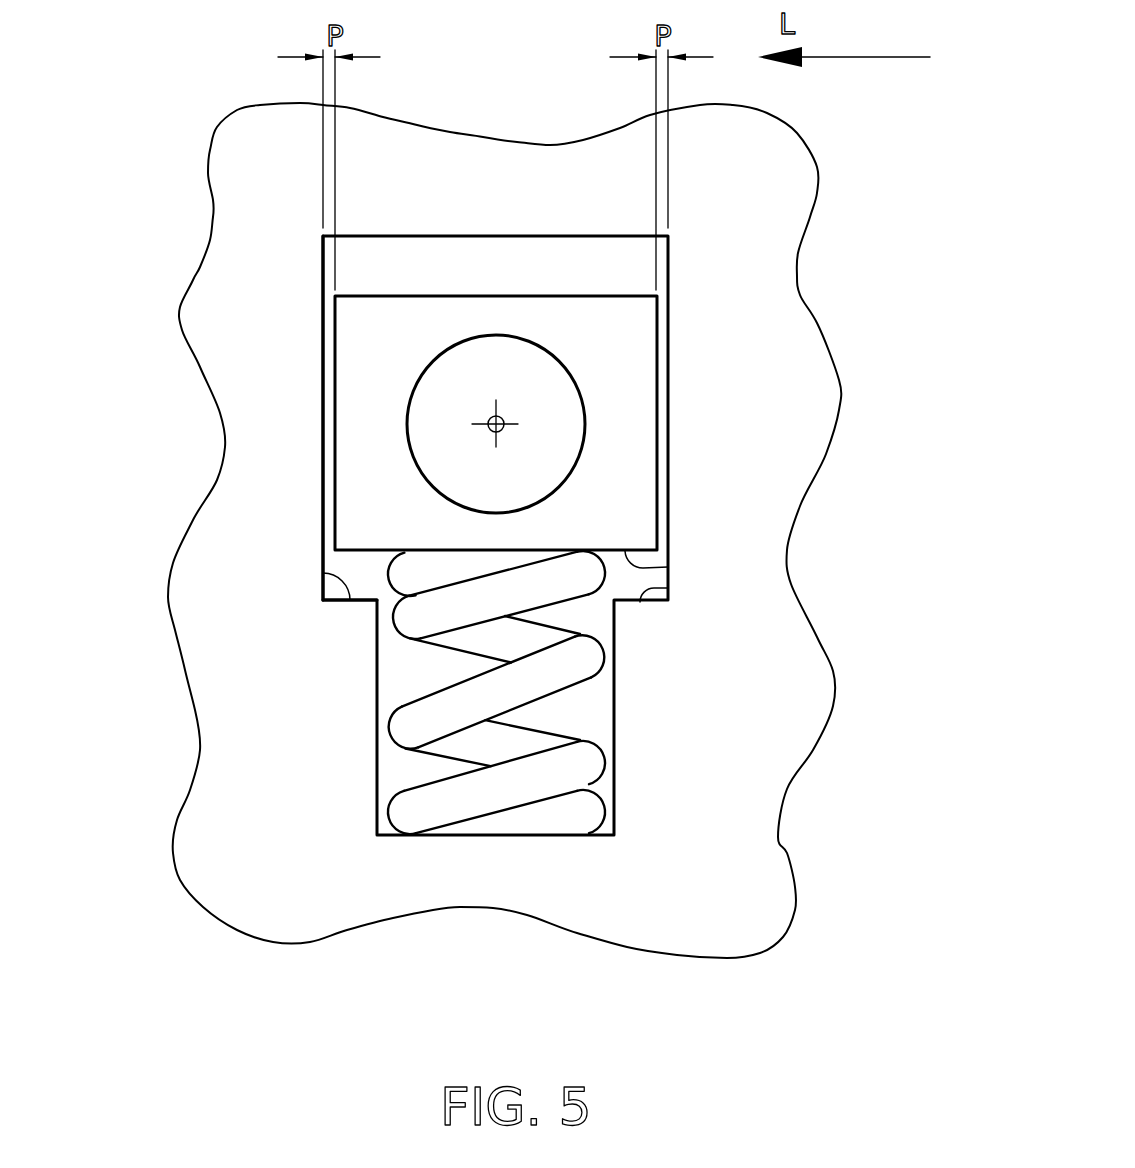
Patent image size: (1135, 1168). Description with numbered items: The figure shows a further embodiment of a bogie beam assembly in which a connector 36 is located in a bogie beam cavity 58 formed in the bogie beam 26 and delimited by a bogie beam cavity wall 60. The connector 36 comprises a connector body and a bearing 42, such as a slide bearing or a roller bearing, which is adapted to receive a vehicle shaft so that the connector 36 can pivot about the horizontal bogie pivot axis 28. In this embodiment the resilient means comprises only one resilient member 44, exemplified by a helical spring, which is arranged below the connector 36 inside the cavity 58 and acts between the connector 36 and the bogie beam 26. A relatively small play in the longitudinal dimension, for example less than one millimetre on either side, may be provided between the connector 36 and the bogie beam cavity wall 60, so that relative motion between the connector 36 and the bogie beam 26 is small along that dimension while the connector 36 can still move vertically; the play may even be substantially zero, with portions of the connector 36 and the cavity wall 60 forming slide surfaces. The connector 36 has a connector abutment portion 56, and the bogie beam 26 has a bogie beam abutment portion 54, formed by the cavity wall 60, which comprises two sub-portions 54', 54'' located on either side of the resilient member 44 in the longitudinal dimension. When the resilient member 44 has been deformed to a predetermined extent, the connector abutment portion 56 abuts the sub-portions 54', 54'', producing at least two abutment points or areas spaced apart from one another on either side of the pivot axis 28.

The bogie beam 26 is at (196, 95).
The horizontal bogie pivot axis 28 is at (489, 429).
The connector 36 is at (627, 373).
The bearing 42 is at (585, 423).
The resilient member 44 is at (565, 690).
The bogie beam abutment portion 54 is at (217, 696).
The sub-portion of the bogie beam abutment portion 54' is at (203, 619).
The sub-portion of the bogie beam abutment portion 54'' is at (796, 627).
The connector abutment portion 56 is at (668, 567).
The bogie beam cavity 58 is at (494, 270).
The bogie beam cavity wall 60 is at (323, 339).